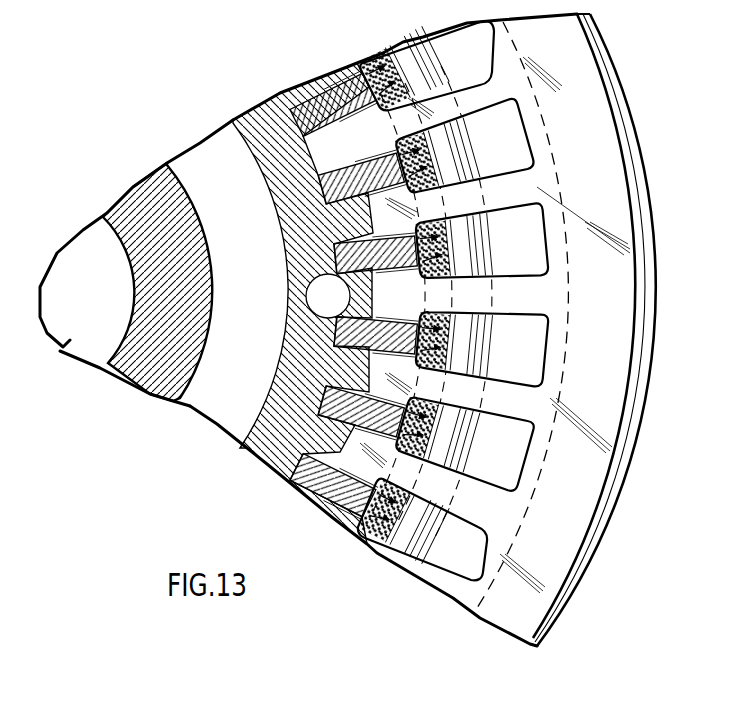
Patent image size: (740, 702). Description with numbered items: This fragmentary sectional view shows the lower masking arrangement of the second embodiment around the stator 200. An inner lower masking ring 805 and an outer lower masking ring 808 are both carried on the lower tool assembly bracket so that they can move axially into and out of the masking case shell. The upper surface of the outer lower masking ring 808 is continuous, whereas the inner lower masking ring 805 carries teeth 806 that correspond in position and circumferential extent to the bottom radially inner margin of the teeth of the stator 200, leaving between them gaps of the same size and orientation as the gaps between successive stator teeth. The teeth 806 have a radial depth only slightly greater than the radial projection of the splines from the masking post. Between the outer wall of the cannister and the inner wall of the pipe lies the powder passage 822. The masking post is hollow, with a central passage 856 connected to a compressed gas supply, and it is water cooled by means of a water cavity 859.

The stator 200 is at (623, 167).
The inner lower masking ring 805 is at (447, 362).
The teeth 806 is at (437, 161).
The outer lower masking ring 808 is at (603, 77).
The powder passage 822 is at (530, 262).
The central passage 856 is at (58, 351).
The water cavity 859 is at (227, 394).